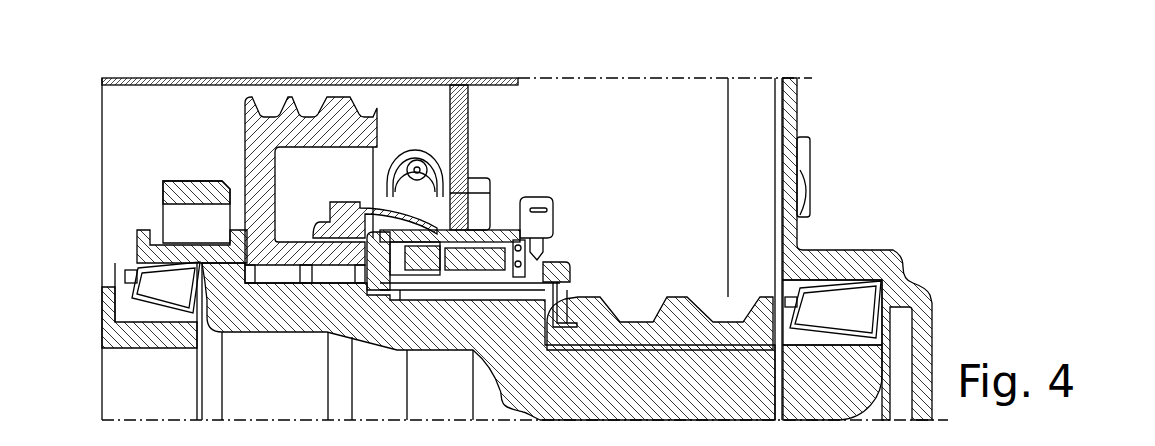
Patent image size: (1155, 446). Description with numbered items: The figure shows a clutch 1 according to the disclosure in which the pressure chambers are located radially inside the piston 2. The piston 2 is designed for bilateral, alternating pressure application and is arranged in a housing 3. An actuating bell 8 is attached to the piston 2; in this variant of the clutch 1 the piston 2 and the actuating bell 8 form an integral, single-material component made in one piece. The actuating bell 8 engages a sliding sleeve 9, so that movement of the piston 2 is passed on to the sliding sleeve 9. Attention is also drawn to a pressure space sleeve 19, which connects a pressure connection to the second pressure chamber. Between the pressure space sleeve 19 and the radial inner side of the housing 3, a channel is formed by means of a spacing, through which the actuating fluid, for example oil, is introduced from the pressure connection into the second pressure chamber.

The clutch 1 is at (568, 81).
The piston 2 is at (452, 227).
The housing 3 is at (558, 262).
The actuating bell 8 is at (335, 222).
The sliding sleeve 9 is at (305, 240).
The pressure space sleeve 19 is at (568, 286).